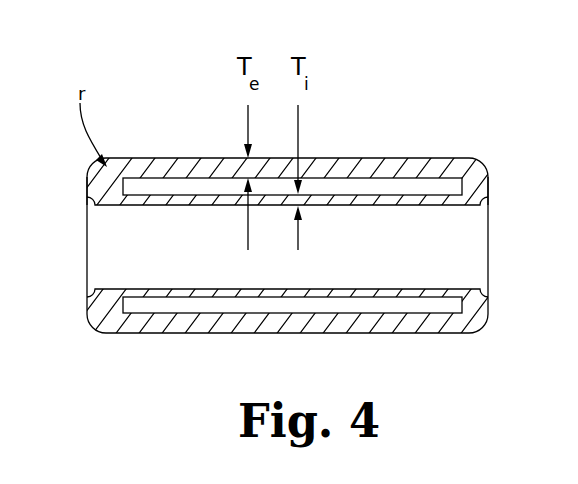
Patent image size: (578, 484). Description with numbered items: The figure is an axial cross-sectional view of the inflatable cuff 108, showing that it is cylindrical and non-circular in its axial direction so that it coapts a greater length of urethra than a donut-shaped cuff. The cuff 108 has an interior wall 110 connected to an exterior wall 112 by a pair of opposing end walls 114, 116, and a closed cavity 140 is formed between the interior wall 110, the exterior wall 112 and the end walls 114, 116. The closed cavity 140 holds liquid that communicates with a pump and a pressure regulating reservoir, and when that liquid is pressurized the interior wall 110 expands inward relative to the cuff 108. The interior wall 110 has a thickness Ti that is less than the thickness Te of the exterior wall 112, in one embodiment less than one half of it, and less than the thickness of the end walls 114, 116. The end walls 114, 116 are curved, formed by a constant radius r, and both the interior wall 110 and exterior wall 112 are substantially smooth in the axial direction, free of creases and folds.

The cuff 108 is at (502, 85).
The interior wall 110 is at (135, 205).
The exterior wall 112 is at (175, 158).
The end wall 114 is at (93, 168).
The end wall 116 is at (488, 176).
The closed cavity 140 is at (370, 186).